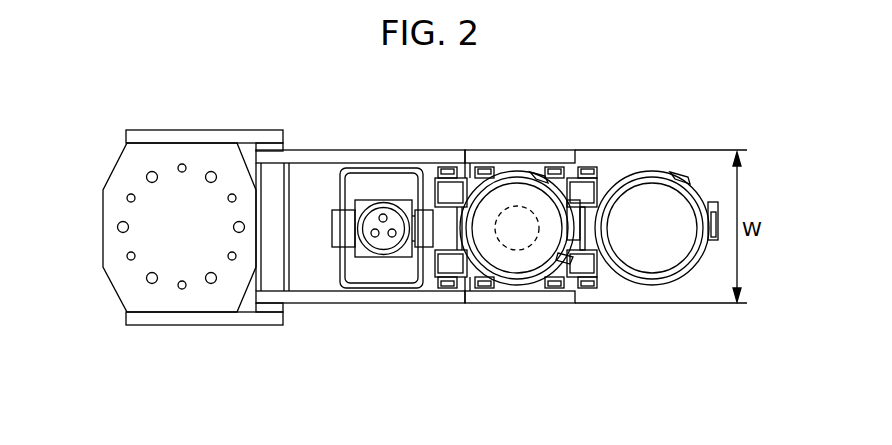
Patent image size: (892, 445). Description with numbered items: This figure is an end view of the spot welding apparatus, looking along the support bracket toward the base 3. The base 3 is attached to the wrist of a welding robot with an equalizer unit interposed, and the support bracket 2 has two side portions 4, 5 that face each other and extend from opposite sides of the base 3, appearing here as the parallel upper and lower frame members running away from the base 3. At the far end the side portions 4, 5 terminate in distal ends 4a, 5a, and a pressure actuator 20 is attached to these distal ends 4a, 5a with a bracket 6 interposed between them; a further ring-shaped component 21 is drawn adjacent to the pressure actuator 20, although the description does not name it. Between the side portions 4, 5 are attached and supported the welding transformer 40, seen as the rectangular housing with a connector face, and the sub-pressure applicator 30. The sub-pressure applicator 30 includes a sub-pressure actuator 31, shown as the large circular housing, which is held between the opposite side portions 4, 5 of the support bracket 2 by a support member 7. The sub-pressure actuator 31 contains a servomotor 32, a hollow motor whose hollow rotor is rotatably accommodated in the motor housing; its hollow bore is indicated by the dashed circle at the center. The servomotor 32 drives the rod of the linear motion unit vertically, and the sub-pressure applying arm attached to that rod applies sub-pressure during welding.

The support bracket 2 is at (304, 148).
The base 3 is at (157, 152).
The side portion 4 is at (313, 301).
The distal end 4a is at (572, 304).
The side portion 5 is at (331, 152).
The distal end 5a is at (573, 160).
The bracket 6 is at (557, 288).
The support member 7 is at (500, 290).
The pressure actuator 20 is at (632, 173).
The ring inner portion 21 is at (672, 190).
The sub-pressure applicator 30 is at (516, 219).
The sub-pressure actuator 31 is at (534, 193).
The servomotor 32 is at (518, 207).
The welding transformer 40 is at (384, 183).